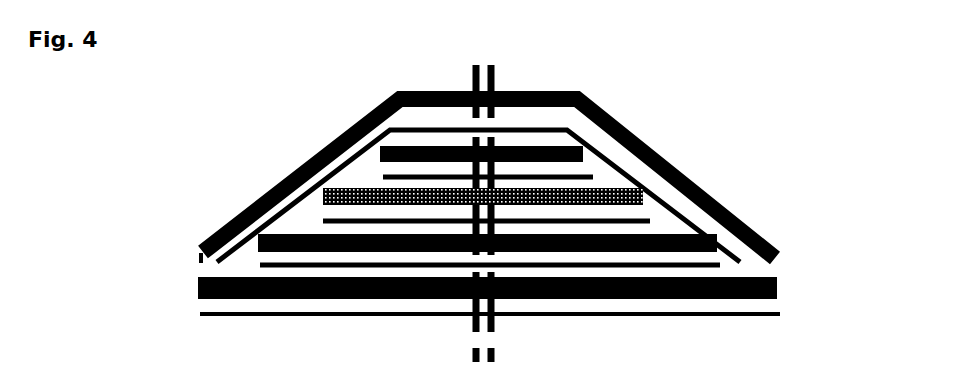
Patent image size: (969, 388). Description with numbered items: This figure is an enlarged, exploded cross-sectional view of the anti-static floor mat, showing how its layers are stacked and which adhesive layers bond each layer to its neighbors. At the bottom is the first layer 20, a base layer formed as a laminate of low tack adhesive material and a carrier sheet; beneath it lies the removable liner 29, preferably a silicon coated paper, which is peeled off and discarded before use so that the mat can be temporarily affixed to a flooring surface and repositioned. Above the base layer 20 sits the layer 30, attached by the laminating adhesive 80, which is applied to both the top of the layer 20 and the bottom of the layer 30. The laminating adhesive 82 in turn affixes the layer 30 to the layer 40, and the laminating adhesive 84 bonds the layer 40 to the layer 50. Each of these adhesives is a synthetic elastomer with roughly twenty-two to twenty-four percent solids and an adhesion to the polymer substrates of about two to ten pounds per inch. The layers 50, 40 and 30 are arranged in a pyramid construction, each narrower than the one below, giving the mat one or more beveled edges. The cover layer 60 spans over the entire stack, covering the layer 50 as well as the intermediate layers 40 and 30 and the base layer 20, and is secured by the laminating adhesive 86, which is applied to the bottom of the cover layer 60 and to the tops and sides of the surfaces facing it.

The cover layer 60 is at (587, 101).
The laminating adhesive 86 is at (567, 129).
The layer 50 is at (592, 152).
The laminating adhesive 84 is at (595, 176).
The intermediate layer 40 is at (652, 200).
The laminating adhesive 82 is at (657, 222).
The intermediate layer 30 is at (724, 247).
The laminating adhesive 80 is at (727, 268).
The first layer 20 is at (780, 298).
The removable liner 29 is at (780, 318).